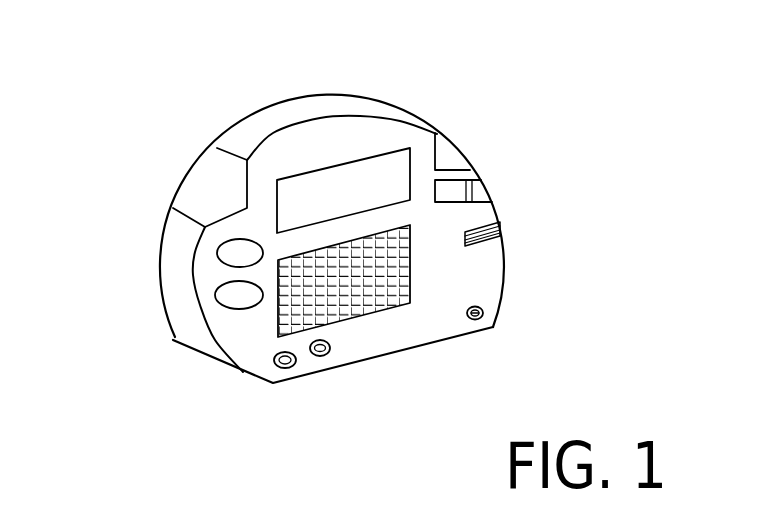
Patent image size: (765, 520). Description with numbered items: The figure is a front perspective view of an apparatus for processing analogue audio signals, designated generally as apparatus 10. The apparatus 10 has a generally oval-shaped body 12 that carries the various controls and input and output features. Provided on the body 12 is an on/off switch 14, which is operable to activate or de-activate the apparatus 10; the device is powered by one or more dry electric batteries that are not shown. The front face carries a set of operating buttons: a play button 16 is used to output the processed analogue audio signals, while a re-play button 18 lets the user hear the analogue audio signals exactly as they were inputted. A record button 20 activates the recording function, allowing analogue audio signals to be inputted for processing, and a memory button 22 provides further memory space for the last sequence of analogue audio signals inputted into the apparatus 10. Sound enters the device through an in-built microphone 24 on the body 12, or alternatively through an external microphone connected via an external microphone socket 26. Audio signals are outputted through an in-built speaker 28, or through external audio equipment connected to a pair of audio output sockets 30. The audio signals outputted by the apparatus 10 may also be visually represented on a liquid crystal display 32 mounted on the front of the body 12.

The apparatus for processing analogue audio signals 10 is at (311, 72).
The body 12 is at (262, 132).
The on/off switch 14 is at (473, 192).
The play button 16 is at (205, 187).
The re-play button 18 is at (232, 253).
The record button 20 is at (453, 155).
The memory button 22 is at (238, 298).
The in-built microphone 24 is at (488, 247).
The external microphone socket 26 is at (483, 310).
The in-built speaker 28 is at (360, 310).
The audio output sockets 30 is at (291, 367).
The liquid crystal display (LCD) 32 is at (315, 183).